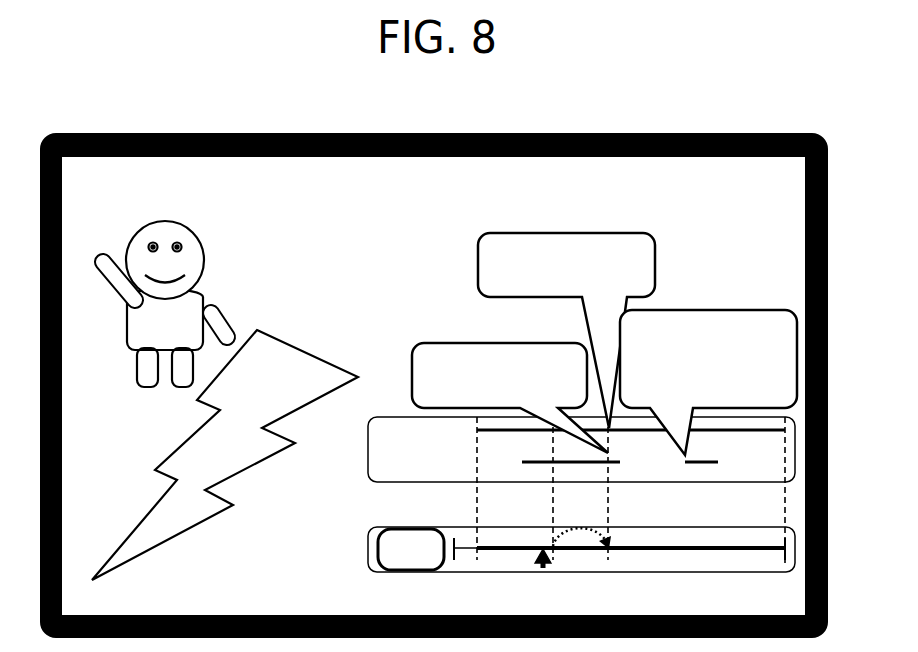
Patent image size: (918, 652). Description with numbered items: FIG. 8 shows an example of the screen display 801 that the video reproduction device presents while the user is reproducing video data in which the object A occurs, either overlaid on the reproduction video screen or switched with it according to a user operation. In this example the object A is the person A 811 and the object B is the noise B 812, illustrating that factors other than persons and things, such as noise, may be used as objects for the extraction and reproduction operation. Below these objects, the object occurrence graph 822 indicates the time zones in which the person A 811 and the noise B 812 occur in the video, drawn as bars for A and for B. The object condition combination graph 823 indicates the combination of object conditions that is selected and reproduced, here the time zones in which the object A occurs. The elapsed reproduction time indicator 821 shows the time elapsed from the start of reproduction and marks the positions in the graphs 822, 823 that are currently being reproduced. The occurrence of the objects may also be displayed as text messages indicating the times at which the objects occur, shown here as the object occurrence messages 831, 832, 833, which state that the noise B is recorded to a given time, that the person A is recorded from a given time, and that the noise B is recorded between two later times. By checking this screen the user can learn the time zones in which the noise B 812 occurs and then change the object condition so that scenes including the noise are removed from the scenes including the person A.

The screen display 801 is at (118, 133).
The person A 811 is at (160, 218).
The noise B 812 is at (257, 330).
The elapsed reproduction time indicator 821 is at (498, 592).
The object occurrence graph 822 is at (366, 420).
The object condition combination graph 823 is at (366, 528).
The object occurrence message 831 is at (500, 340).
The object occurrence message 832 is at (600, 229).
The object occurrence message 833 is at (707, 308).